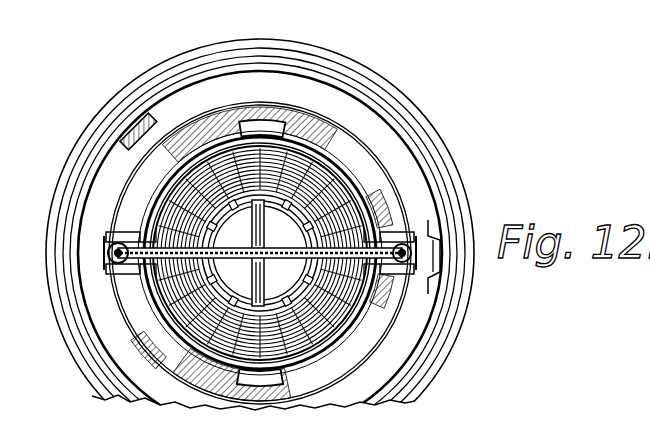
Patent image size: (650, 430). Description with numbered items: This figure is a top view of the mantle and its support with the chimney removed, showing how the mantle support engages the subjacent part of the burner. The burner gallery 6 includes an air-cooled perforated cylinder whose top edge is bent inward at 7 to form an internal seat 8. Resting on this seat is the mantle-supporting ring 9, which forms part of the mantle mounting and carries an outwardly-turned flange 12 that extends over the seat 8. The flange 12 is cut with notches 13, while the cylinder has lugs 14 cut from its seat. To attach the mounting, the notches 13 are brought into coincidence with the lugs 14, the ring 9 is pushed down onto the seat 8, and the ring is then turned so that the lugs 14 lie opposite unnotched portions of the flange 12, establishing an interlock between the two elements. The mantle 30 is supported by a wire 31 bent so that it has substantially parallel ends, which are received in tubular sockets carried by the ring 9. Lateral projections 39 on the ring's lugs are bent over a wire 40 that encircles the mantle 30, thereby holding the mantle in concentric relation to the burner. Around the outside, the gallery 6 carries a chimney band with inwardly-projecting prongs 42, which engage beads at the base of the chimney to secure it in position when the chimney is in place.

The burner gallery 6 is at (260, 234).
The inwardly bent top edge 7 is at (288, 253).
The internal seat 8 is at (311, 212).
The mantle-supporting ring 9 is at (253, 412).
The outwardly-turned flange 12 is at (260, 246).
The notches 13 is at (271, 222).
The lugs 14 is at (240, 248).
The mantle 30 is at (254, 280).
The wire 31 is at (260, 253).
The lateral projections 39 is at (214, 272).
The wire 40 is at (328, 253).
The inwardly-projecting prongs 42 is at (270, 206).